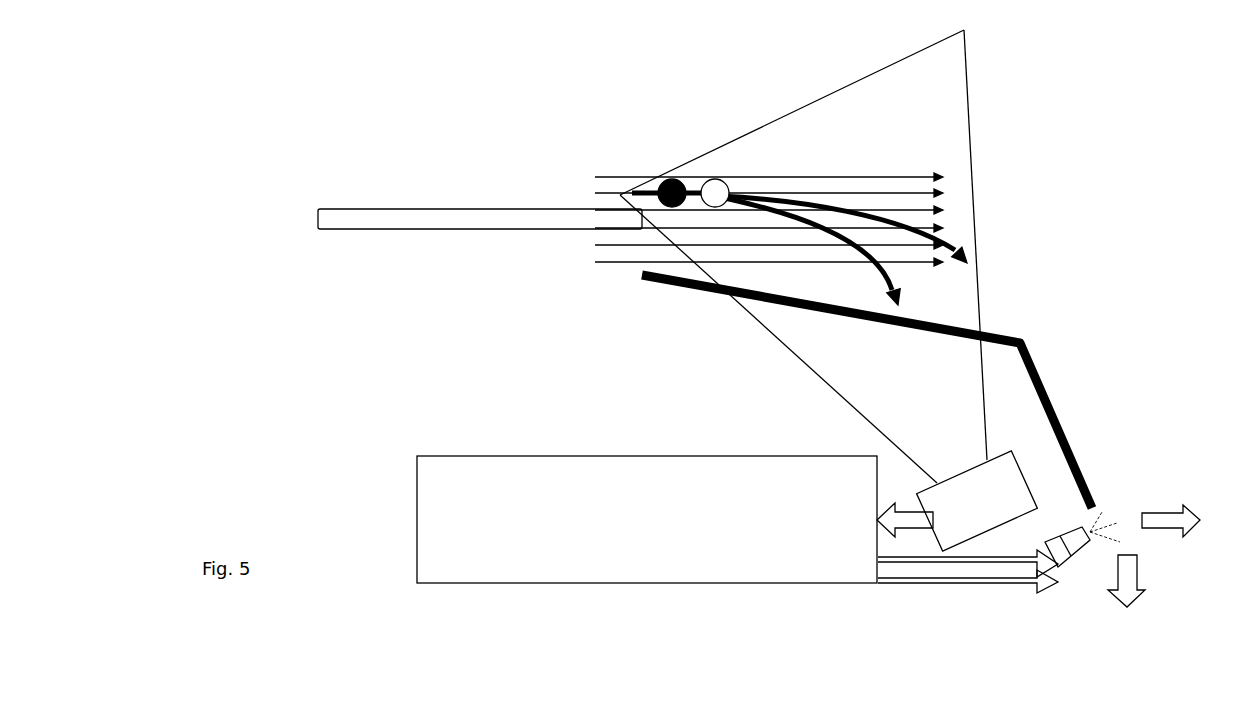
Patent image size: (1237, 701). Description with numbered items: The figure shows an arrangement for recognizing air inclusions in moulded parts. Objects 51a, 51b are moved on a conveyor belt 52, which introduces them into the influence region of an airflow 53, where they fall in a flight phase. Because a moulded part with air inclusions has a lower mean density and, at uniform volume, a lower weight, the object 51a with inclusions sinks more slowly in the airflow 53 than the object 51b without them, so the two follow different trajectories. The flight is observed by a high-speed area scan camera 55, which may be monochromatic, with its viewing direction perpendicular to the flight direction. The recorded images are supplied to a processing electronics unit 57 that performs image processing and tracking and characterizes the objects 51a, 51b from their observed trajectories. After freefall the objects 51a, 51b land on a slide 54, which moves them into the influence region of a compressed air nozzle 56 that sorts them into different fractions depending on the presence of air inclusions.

The object (moulded part) 51a is at (653, 178).
The object (moulded part) 51b is at (712, 178).
The conveyor belt 52 is at (343, 231).
The airflow 53 is at (900, 175).
The slide 54 is at (1035, 360).
The high-speed area scan camera 55 is at (1027, 480).
The compressed air nozzle 56 is at (1063, 532).
The processing electronics unit 57 is at (647, 453).